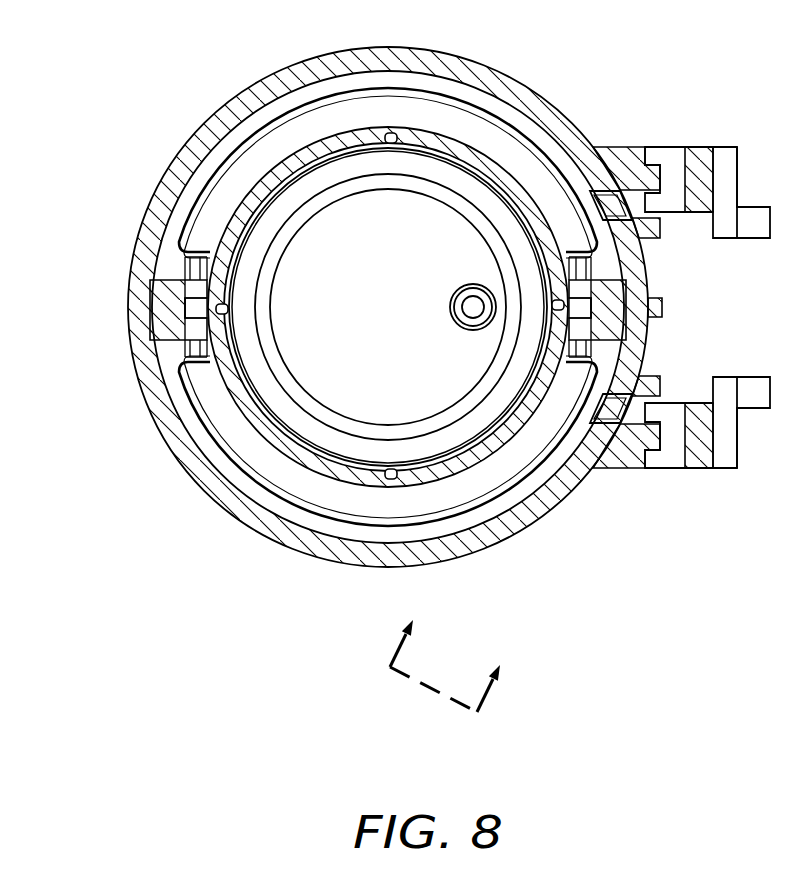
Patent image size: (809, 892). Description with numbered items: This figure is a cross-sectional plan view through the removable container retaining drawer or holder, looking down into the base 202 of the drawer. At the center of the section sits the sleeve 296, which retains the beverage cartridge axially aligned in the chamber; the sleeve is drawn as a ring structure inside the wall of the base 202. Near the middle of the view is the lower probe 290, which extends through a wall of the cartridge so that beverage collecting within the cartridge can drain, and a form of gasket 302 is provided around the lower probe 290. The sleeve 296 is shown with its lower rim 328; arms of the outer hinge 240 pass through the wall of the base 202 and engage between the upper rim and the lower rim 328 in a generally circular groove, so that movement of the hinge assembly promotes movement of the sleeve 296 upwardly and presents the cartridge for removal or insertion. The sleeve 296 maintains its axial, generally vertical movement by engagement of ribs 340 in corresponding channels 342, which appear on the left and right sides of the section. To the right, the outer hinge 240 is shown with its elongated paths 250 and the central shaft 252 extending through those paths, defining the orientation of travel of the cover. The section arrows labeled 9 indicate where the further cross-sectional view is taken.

The base 202 is at (208, 120).
The outer hinge 240 is at (663, 146).
The elongated paths 250 is at (712, 152).
The central shaft 252 is at (706, 150).
The lower probe 290 is at (473, 310).
The sleeve 296 is at (300, 470).
The gasket 302 is at (451, 306).
The lower rim 328 is at (520, 465).
The ribs 340 is at (185, 280).
The channels 342 is at (195, 333).
The section line 9- 9 is at (455, 650).